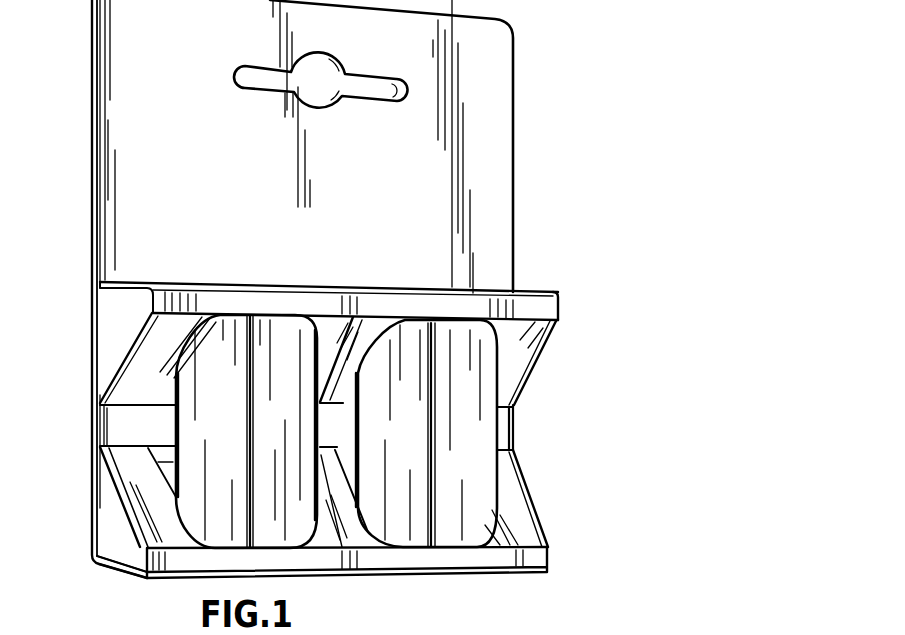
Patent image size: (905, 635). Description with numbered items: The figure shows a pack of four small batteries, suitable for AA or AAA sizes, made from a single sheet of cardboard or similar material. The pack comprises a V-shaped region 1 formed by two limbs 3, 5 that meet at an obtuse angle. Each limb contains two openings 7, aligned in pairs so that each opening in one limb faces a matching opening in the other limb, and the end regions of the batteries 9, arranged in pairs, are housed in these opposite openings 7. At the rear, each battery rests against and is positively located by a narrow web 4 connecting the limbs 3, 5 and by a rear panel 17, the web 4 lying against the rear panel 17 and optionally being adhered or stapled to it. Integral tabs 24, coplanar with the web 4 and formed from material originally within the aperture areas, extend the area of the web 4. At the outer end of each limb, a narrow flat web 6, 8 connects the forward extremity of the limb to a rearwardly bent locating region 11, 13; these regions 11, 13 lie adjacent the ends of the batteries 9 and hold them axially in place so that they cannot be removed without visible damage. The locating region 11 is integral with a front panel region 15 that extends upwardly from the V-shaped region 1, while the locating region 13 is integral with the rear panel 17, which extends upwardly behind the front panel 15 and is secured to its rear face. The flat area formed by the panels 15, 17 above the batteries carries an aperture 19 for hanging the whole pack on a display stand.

The V-shaped region 1 is at (556, 373).
The limb 3 is at (118, 362).
The web 4 is at (123, 419).
The limb 5 is at (98, 505).
The narrow flat web 6 is at (540, 307).
The opening 7 is at (313, 535).
The narrow flat web 8 is at (540, 558).
The battery 9 is at (420, 520).
The locating region 11 is at (130, 281).
The locating region 13 is at (116, 572).
The front panel region 15 is at (490, 186).
The rear panel 17 is at (92, 134).
The aperture 19 is at (320, 98).
The tab 24 is at (346, 455).